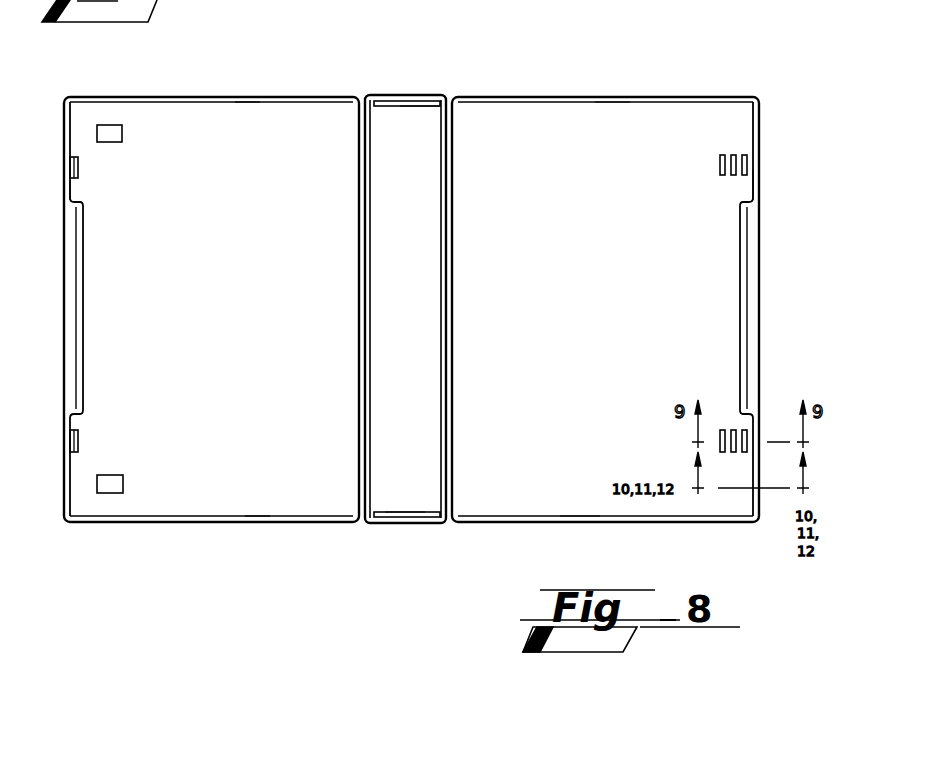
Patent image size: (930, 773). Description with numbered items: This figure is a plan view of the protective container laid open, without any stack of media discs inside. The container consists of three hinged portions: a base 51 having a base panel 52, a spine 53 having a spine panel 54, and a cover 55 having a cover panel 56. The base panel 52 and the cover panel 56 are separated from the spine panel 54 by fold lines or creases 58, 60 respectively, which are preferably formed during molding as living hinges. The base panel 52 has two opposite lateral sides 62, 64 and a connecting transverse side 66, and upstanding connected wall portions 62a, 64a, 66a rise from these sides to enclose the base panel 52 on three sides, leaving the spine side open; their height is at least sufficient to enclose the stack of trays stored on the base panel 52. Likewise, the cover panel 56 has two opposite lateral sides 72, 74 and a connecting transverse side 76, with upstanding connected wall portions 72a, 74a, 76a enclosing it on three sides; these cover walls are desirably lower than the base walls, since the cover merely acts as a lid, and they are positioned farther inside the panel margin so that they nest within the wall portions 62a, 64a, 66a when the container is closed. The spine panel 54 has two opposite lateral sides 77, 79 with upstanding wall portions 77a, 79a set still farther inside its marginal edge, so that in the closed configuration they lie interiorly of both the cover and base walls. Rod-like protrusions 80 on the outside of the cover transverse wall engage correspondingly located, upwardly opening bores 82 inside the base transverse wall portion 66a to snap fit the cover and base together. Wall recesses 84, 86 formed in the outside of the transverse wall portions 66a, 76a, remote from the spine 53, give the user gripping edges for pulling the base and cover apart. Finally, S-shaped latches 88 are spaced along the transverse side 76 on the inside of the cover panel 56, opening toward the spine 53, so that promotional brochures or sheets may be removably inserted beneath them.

The base 51 is at (680, 92).
The base panel 52 is at (625, 309).
The spine 53 is at (415, 92).
The spine panel 54 is at (424, 309).
The cover 55 is at (218, 92).
The cover panel 56 is at (254, 309).
The fold line or crease 58 is at (453, 253).
The fold line or crease 60 is at (359, 248).
The lateral side 62 is at (557, 97).
The wall portion 62a is at (612, 103).
The lateral side 64 is at (603, 522).
The wall portion 64a is at (580, 516).
The transverse side 66 is at (760, 180).
The transverse wall portion 66a is at (752, 188).
The lateral side 72 is at (190, 97).
The wall portion 72a is at (248, 103).
The lateral side 74 is at (212, 522).
The wall portion 74a is at (257, 516).
The transverse side 76 is at (65, 157).
The transverse wall portion 76a is at (75, 194).
The lateral side 77 is at (435, 97).
The spine wall portion 77a is at (405, 106).
The lateral side 79 is at (390, 523).
The spine wall portion 79a is at (403, 512).
The rod-like protrusion 80 is at (78, 158).
The bore 82 is at (733, 155).
The wall recess 84 is at (755, 248).
The wall recess 86 is at (72, 290).
The S-shaped latch 88 is at (122, 133).